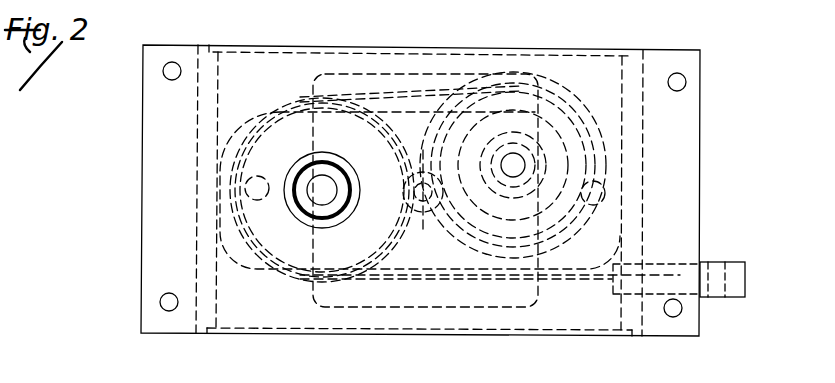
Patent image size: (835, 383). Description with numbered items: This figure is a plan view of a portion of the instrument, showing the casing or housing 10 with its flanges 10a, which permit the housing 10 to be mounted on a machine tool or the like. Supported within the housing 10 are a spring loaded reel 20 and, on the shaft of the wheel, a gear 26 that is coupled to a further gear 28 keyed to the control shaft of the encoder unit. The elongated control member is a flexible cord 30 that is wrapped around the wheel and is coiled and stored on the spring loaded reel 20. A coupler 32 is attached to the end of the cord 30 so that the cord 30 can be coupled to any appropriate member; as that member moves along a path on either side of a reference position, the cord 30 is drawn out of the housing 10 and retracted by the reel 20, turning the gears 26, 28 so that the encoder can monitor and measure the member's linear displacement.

The housing 10 is at (500, 31).
The flanges 10a is at (173, 113).
The spring loaded reel 20 is at (560, 250).
The gear 26 is at (255, 252).
The gear 28 is at (414, 212).
The flexible cord 30 is at (583, 282).
The coupler 32 is at (745, 273).